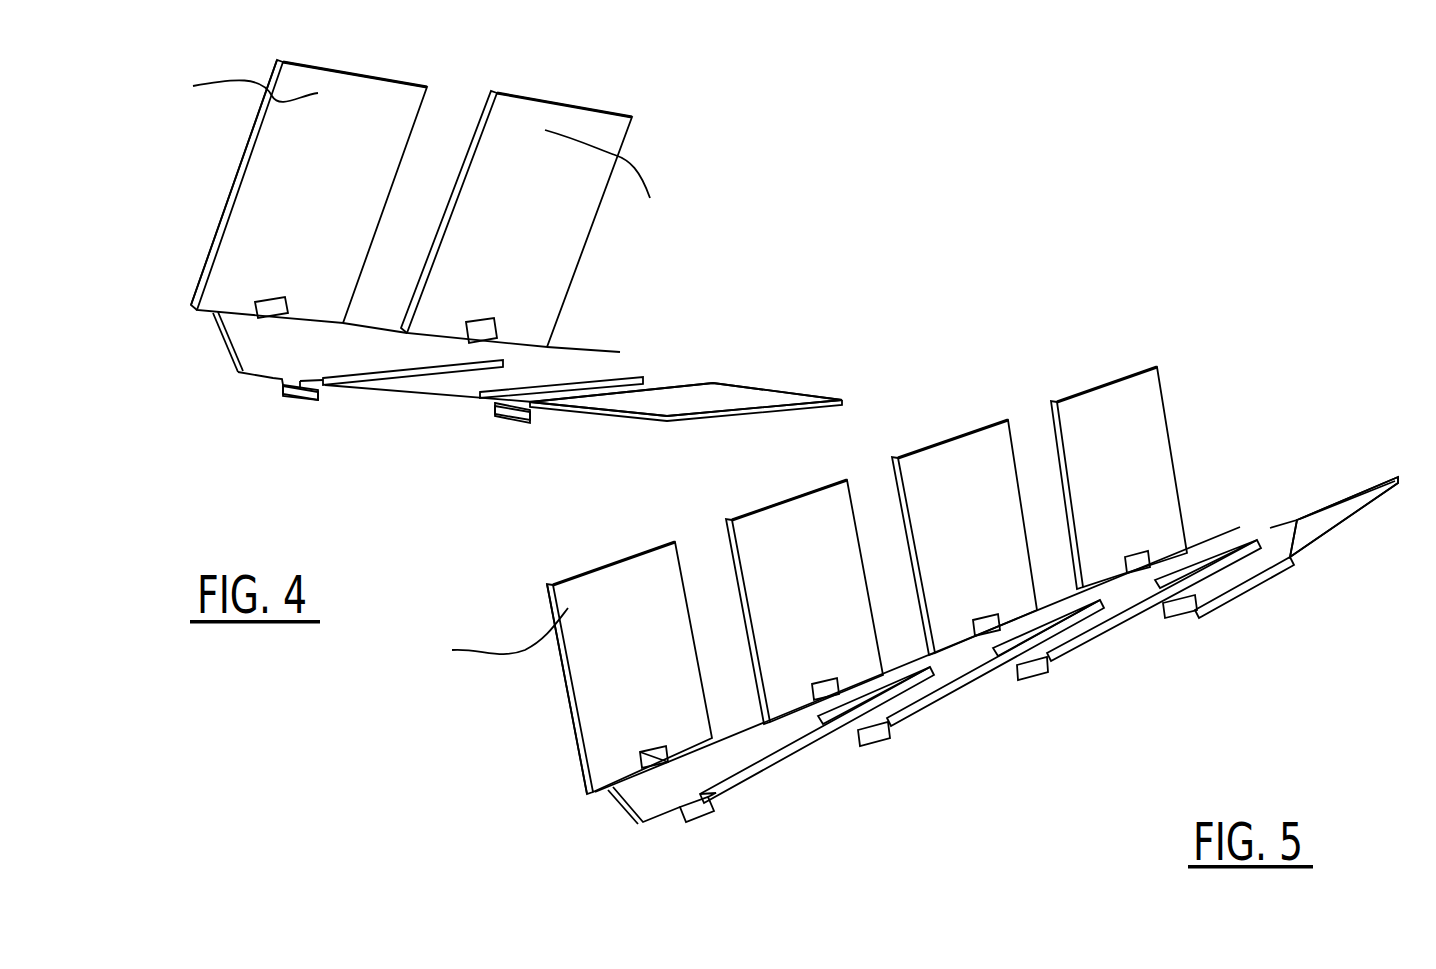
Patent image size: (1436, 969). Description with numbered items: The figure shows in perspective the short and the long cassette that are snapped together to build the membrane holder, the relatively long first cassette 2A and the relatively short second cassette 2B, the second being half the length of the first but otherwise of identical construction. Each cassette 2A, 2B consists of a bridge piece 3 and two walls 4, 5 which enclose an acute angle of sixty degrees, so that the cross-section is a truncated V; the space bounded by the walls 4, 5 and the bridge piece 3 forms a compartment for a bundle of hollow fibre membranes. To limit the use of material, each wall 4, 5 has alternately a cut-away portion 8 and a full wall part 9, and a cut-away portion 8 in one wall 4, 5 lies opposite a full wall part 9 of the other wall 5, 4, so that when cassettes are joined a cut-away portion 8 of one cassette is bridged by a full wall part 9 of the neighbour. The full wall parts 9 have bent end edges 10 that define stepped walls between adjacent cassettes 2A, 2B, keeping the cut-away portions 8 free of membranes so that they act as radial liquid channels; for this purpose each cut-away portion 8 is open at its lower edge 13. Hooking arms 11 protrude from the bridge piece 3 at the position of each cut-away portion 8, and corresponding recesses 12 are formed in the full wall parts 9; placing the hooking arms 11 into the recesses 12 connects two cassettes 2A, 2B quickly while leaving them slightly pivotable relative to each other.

In FIG. 5, the first cassette 2A is at (440, 753).
In FIG. 4, the second cassette 2B is at (752, 203).
In FIG. 4, the bridge piece 3 is at (252, 347).
In FIG. 5, the bridge piece 3 is at (647, 795).
In FIG. 4, the wall 4 is at (200, 165).
In FIG. 5, the wall 4 is at (530, 692).
In FIG. 4, the wall 5 is at (828, 355).
In FIG. 5, the wall 5 is at (1400, 520).
In FIG. 4, the cut-away portion 8 is at (445, 142).
In FIG. 5, the cut-away portion 8 is at (710, 563).
In FIG. 4, the full wall part 9 is at (740, 358).
In FIG. 5, the full wall part 9 is at (1365, 617).
In FIG. 4, the bent end edge 10 is at (477, 398).
In FIG. 5, the bent end edge 10 is at (775, 768).
In FIG. 4, the hooking arm 11 is at (300, 400).
In FIG. 5, the hooking arm 11 is at (876, 745).
In FIG. 4, the recess 12 is at (276, 303).
In FIG. 5, the recess 12 is at (655, 750).
In FIG. 4, the lower edge 13 is at (253, 378).
In FIG. 5, the lower edge 13 is at (743, 728).